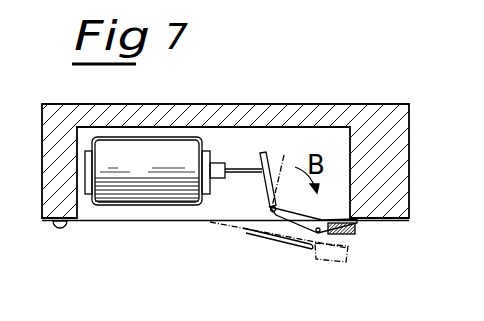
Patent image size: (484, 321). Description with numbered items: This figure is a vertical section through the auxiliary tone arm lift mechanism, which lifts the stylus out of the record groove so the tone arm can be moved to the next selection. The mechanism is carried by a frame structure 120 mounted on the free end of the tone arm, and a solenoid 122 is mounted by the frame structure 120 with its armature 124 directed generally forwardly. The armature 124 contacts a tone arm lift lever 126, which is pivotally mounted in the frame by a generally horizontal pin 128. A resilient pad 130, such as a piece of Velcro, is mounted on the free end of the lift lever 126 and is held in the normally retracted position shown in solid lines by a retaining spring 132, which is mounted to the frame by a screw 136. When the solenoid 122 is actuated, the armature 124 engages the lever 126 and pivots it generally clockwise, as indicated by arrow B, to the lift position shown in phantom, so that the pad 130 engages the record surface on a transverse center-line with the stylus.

The frame structure 120 is at (203, 103).
The solenoid 122 is at (130, 150).
The armature 124 is at (248, 145).
The tone arm lift lever 126 is at (265, 180).
The pin 128 is at (277, 227).
The resilient pad 130 is at (357, 224).
The retaining spring 132 is at (243, 227).
The screw 136 is at (60, 229).